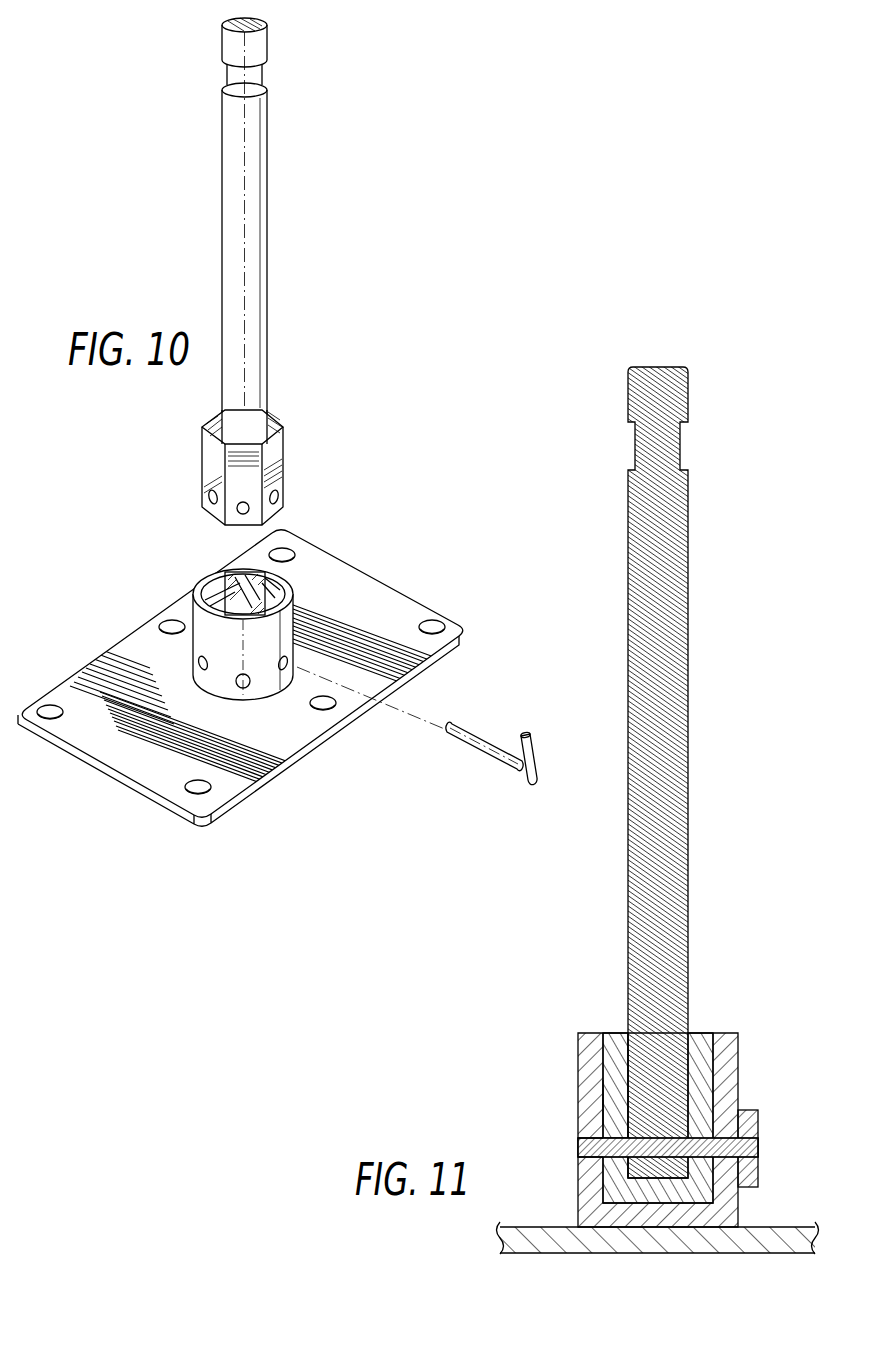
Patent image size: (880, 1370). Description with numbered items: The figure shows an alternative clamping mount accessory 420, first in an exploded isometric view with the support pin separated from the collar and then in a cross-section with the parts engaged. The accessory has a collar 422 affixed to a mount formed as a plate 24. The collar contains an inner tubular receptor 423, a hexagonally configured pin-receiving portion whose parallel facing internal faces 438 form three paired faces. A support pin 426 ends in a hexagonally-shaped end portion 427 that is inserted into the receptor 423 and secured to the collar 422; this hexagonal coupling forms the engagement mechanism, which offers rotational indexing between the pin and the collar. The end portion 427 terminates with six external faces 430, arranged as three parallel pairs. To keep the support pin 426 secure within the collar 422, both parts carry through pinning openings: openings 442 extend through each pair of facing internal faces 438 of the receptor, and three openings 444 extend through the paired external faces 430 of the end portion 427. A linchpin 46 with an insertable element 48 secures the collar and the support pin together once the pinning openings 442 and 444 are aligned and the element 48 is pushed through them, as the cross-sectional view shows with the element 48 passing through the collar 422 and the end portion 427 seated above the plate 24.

In FIG. 10, the clamping mount accessory 420 is at (284, 271).
In FIG. 11, the clamping mount accessory 420 is at (638, 763).
In FIG. 10, the support pin 426 is at (258, 133).
In FIG. 11, the support pin 426 is at (690, 535).
In FIG. 10, the hexagonally-shaped end portion 427 is at (266, 467).
In FIG. 11, the hexagonally-shaped end portion 427 is at (610, 1092).
In FIG. 10, the external faces 430 is at (238, 481).
In FIG. 11, the external faces 430 is at (602, 1110).
In FIG. 10, the pinning openings 444 is at (282, 497).
In FIG. 11, the pinning openings 444 is at (618, 1143).
In FIG. 10, the internal faces 438 is at (238, 570).
In FIG. 11, the internal faces 438 is at (603, 1102).
In FIG. 10, the inner tubular receptor 423 is at (262, 575).
In FIG. 11, the inner tubular receptor 423 is at (614, 1052).
In FIG. 10, the collar 422 is at (229, 669).
In FIG. 11, the collar 422 is at (746, 1059).
In FIG. 10, the plate 24 is at (378, 618).
In FIG. 11, the plate 24 is at (758, 1225).
In FIG. 10, the insertable element 48 is at (470, 728).
In FIG. 11, the insertable element 48 is at (700, 1137).
In FIG. 10, the linchpin 46 is at (534, 748).
In FIG. 11, the linchpin 46 is at (758, 1145).
In FIG. 10, the pinning openings 442 is at (240, 685).
In FIG. 11, the pinning openings 442 is at (584, 1150).